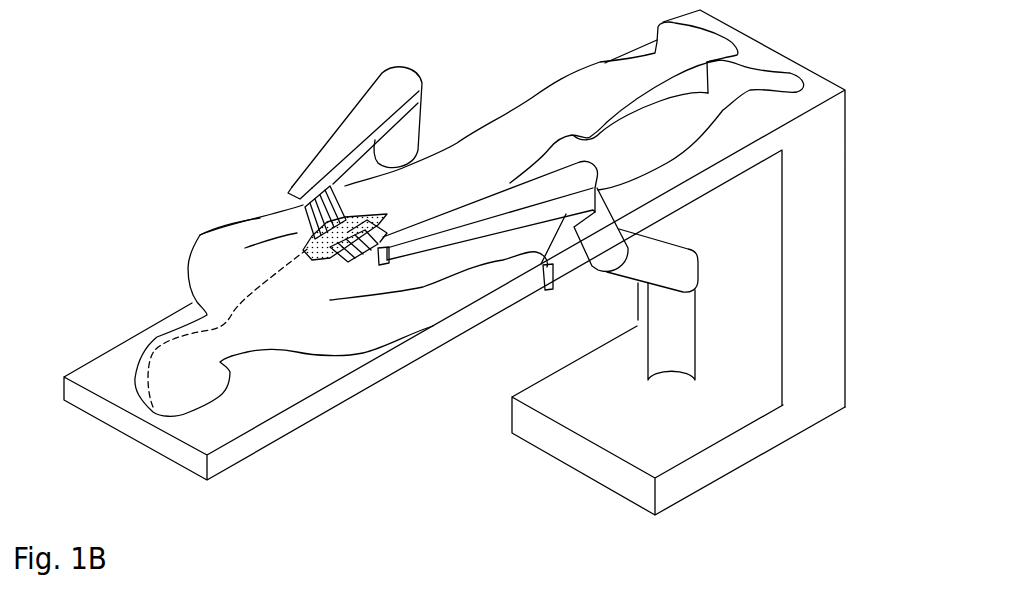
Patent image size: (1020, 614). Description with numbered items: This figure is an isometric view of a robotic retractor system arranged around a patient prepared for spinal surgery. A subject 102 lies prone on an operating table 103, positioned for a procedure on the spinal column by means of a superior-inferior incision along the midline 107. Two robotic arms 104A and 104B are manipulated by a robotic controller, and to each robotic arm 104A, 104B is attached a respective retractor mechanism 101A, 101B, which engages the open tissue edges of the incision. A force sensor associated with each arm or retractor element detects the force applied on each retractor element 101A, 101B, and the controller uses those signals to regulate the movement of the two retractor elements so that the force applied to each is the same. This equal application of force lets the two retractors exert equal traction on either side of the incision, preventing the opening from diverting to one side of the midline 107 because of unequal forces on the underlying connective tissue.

The retractor mechanism 101A is at (292, 212).
The retractor mechanism 101B is at (350, 258).
The subject 102 is at (200, 235).
The operating table 103 is at (801, 94).
The robotic arm 104A is at (418, 70).
The robotic arm 104B is at (598, 177).
The midline 107 is at (150, 375).